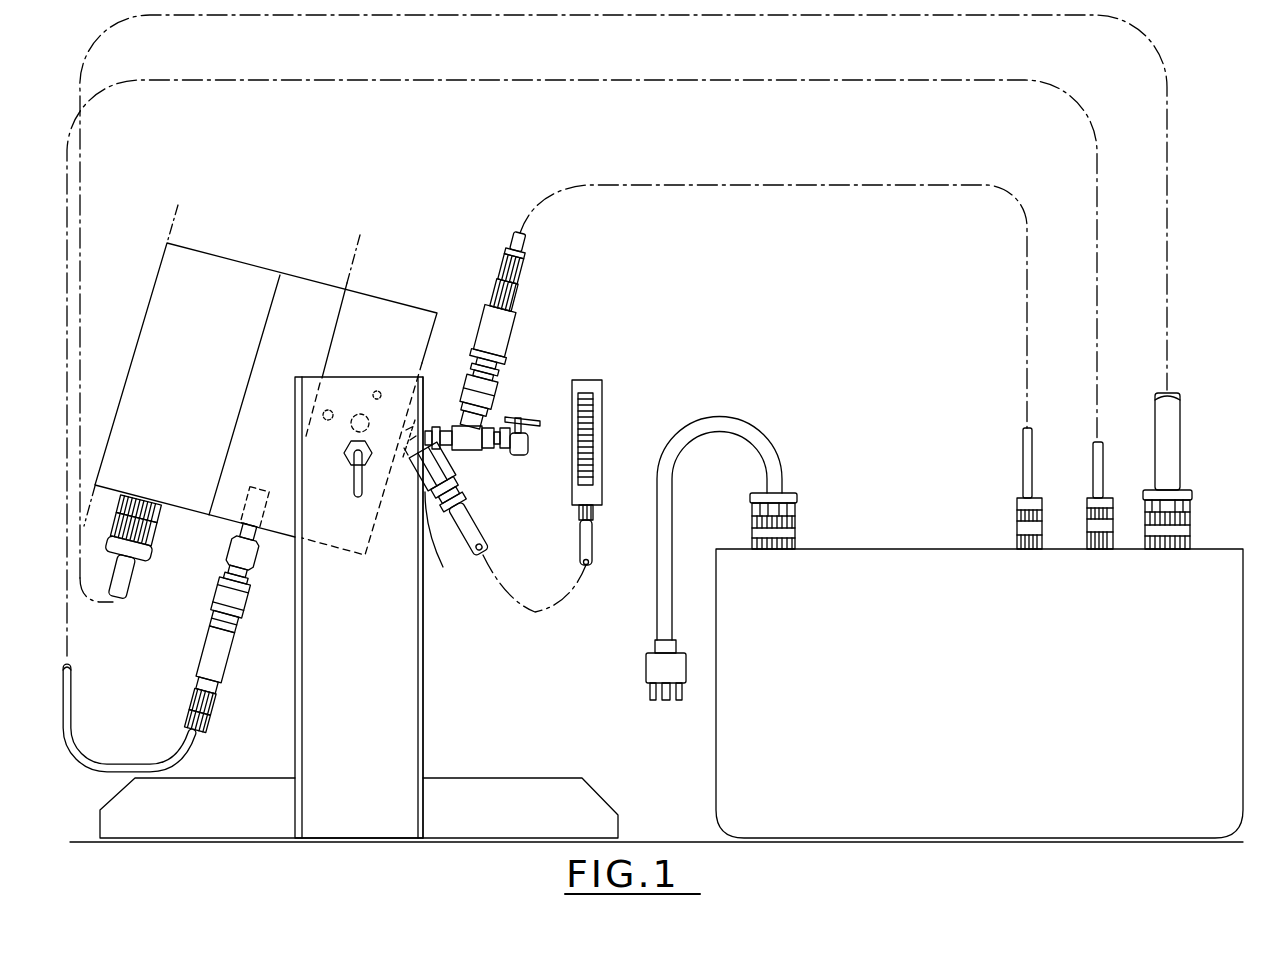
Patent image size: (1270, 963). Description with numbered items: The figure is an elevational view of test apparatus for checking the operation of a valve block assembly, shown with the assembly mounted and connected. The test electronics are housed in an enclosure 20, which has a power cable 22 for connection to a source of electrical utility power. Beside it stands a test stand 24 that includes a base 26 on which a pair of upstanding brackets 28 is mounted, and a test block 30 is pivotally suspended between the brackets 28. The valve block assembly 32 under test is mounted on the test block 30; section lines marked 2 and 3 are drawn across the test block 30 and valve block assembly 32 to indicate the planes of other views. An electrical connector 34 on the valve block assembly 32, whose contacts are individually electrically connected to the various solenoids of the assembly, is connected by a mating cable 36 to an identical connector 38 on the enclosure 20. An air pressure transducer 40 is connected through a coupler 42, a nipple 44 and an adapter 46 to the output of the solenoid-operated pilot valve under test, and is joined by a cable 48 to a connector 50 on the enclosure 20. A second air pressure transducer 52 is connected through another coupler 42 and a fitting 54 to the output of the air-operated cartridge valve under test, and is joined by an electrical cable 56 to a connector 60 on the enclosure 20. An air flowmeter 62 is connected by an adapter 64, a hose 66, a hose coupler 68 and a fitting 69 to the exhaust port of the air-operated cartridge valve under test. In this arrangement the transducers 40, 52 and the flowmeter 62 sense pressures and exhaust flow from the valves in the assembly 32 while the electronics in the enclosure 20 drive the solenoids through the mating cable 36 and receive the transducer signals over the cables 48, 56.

The section line 2- 2 is at (166, 217).
The section line 3- 3 is at (355, 258).
The enclosure 20 is at (908, 549).
The power cable 22 is at (757, 428).
The test stand 24 is at (433, 714).
The base 26 is at (532, 785).
The upstanding brackets 28 is at (425, 637).
The test block 30 is at (408, 305).
The valve block assembly 32 is at (223, 266).
The electrical connector 34 is at (160, 522).
The mating cable 36 is at (82, 268).
The connector 38 is at (1190, 540).
The air pressure transducer 40 is at (205, 660).
The coupler 42 is at (217, 602).
The nipple 44 is at (217, 577).
The adapter 46 is at (223, 560).
The cable 48 is at (73, 705).
The connector 50 is at (1090, 543).
The second air pressure transducer 52 is at (498, 340).
The fitting 54 is at (466, 452).
The electrical cable 56 is at (838, 186).
The connector 60 is at (1018, 543).
The air flowmeter 62 is at (603, 417).
The adapter 64 is at (578, 515).
The hose 66 is at (475, 540).
The hose coupler 68 is at (442, 549).
The fitting 69 is at (428, 455).